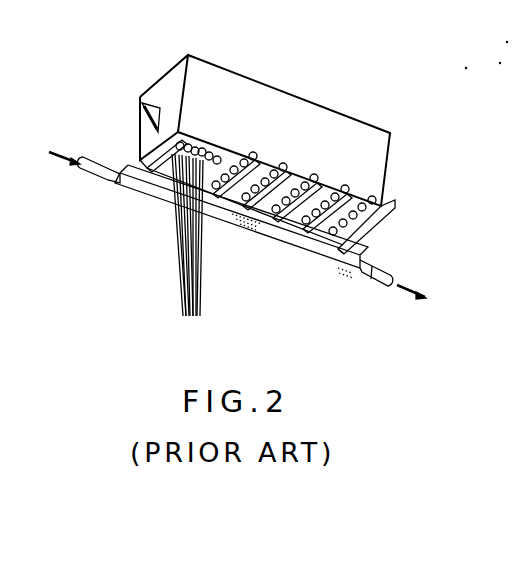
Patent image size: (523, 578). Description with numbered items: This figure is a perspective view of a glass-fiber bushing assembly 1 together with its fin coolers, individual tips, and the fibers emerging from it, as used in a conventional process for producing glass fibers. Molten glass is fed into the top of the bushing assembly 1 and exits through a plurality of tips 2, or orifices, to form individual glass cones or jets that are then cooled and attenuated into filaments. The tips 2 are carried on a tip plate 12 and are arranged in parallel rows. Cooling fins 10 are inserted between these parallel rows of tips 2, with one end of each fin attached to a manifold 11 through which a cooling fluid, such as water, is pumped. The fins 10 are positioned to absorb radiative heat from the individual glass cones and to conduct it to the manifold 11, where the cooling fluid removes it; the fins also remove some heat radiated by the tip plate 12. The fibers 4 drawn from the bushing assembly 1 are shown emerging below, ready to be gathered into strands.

The bushing assembly 1 is at (348, 103).
The tips 2 is at (325, 193).
The fibers 4 is at (177, 254).
The cooling fins 10 is at (360, 232).
The manifold 11 is at (305, 262).
The tip plate 12 is at (355, 199).